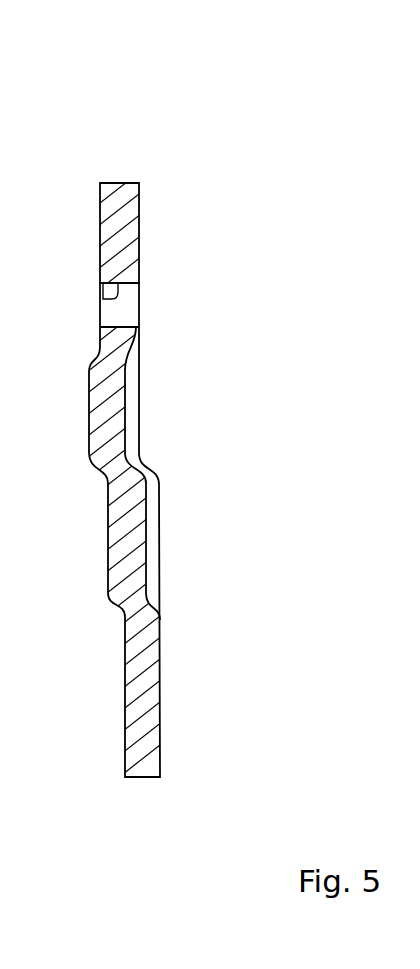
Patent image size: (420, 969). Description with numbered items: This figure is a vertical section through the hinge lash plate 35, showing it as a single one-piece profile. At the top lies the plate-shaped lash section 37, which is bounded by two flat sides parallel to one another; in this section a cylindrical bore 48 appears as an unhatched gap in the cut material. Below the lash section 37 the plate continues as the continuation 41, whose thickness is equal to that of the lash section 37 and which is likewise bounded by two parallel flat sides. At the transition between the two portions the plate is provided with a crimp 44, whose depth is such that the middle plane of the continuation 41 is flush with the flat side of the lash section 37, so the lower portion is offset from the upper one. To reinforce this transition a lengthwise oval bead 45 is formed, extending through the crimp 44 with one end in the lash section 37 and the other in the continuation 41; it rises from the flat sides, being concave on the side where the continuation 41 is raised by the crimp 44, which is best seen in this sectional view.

The hinge lash plate 35 is at (149, 419).
The lash section 37 is at (152, 237).
The cylindrical bore 48 is at (112, 299).
The lengthwise oval bead 45 is at (132, 396).
The crimp 44 is at (145, 473).
The continuation 41 is at (188, 690).